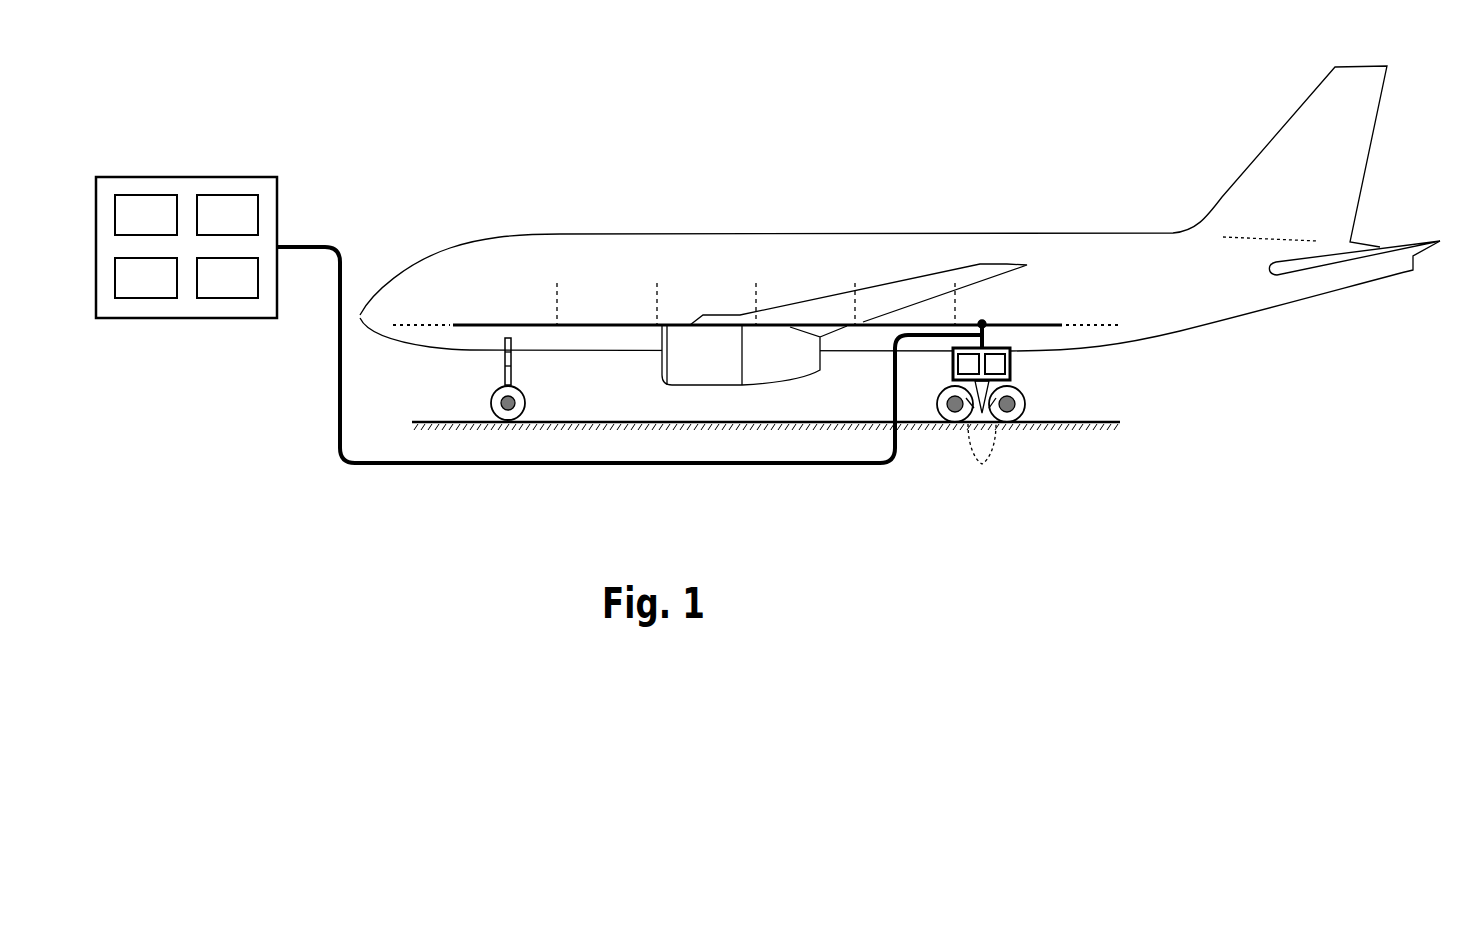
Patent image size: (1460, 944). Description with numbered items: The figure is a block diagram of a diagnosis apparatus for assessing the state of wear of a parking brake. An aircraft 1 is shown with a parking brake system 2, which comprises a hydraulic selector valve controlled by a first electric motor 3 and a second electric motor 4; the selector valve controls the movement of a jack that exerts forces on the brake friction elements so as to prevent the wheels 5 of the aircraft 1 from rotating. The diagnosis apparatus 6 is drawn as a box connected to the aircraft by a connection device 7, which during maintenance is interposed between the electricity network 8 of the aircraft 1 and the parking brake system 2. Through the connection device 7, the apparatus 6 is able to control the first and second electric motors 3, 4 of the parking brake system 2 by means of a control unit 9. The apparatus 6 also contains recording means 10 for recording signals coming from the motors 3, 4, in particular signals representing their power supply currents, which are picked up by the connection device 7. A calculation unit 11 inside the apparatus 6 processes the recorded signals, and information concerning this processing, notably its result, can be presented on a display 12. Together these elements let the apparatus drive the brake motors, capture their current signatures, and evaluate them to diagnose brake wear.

The aircraft 1 is at (569, 205).
The parking brake system 2 is at (1006, 406).
The first electric motor 3 is at (960, 365).
The second electric motor 4 is at (1006, 367).
The wheels 5 is at (982, 437).
The diagnosis apparatus 6 is at (186, 195).
The connection device 7 is at (643, 467).
The electricity network 8 is at (490, 325).
The control unit 9 is at (227, 215).
The recording means 10 is at (227, 278).
The calculation unit 11 is at (146, 215).
The display 12 is at (146, 278).